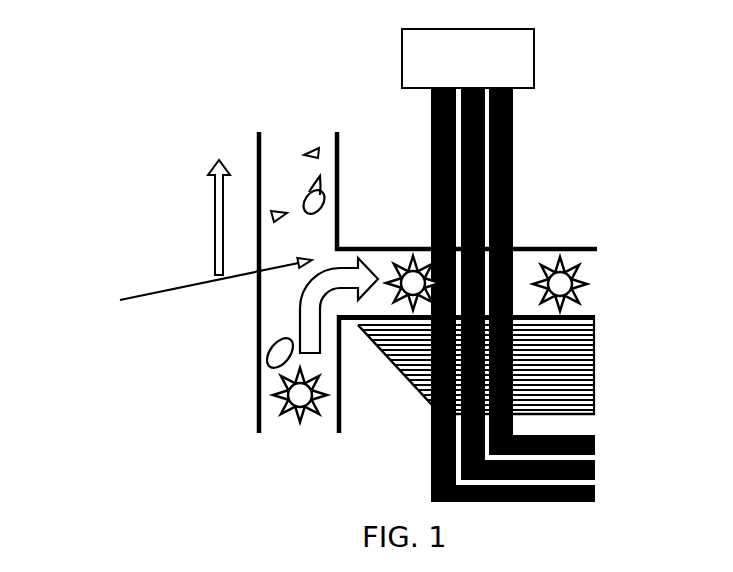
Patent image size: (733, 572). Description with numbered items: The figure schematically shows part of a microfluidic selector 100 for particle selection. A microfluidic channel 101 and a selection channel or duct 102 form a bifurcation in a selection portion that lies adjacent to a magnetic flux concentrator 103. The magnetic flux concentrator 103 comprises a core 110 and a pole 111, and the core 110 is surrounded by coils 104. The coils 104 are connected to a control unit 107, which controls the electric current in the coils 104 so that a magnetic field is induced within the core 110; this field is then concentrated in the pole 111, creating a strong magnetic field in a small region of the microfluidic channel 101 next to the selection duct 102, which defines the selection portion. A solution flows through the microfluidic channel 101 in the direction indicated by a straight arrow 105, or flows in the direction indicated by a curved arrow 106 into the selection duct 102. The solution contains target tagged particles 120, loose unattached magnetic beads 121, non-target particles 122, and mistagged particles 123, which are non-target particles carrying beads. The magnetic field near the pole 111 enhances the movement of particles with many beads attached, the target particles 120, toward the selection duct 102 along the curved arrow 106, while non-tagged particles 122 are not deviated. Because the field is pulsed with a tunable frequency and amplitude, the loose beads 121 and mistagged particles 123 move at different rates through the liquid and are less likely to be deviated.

The microfluidic selector 100 is at (118, 73).
The microfluidic channel 101 is at (257, 165).
The selection channel or duct 102 is at (363, 248).
The magnetic flux concentrator 103 is at (609, 378).
The coils 104 is at (530, 129).
The straight arrow 105 is at (213, 202).
The curved arrow 106 is at (300, 298).
The control unit 107 is at (468, 58).
The core 110 is at (583, 340).
The pole 111 is at (347, 328).
The target tagged particles 120 is at (286, 393).
The loose MBs 121 is at (187, 286).
The non-target particles 122 is at (270, 347).
The mistagged particles 123 is at (305, 195).